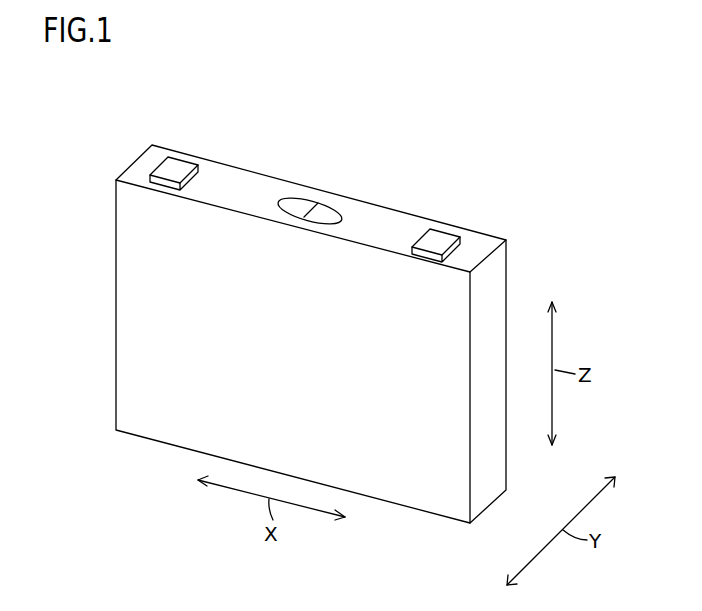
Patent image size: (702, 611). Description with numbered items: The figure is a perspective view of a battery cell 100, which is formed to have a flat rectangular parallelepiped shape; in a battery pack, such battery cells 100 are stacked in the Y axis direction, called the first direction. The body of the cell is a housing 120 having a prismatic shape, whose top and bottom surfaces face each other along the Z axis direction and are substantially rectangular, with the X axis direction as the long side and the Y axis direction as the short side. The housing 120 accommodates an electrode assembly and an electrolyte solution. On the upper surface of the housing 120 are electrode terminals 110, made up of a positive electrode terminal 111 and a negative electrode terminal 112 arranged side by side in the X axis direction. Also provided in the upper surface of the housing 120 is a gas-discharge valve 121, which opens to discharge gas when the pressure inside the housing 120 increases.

The battery cell 100 is at (126, 127).
The electrode terminals 110 is at (447, 112).
The positive electrode terminal 111 is at (173, 170).
The negative electrode terminal 112 is at (438, 238).
The housing 120 is at (387, 492).
The gas-discharge valve 121 is at (297, 203).